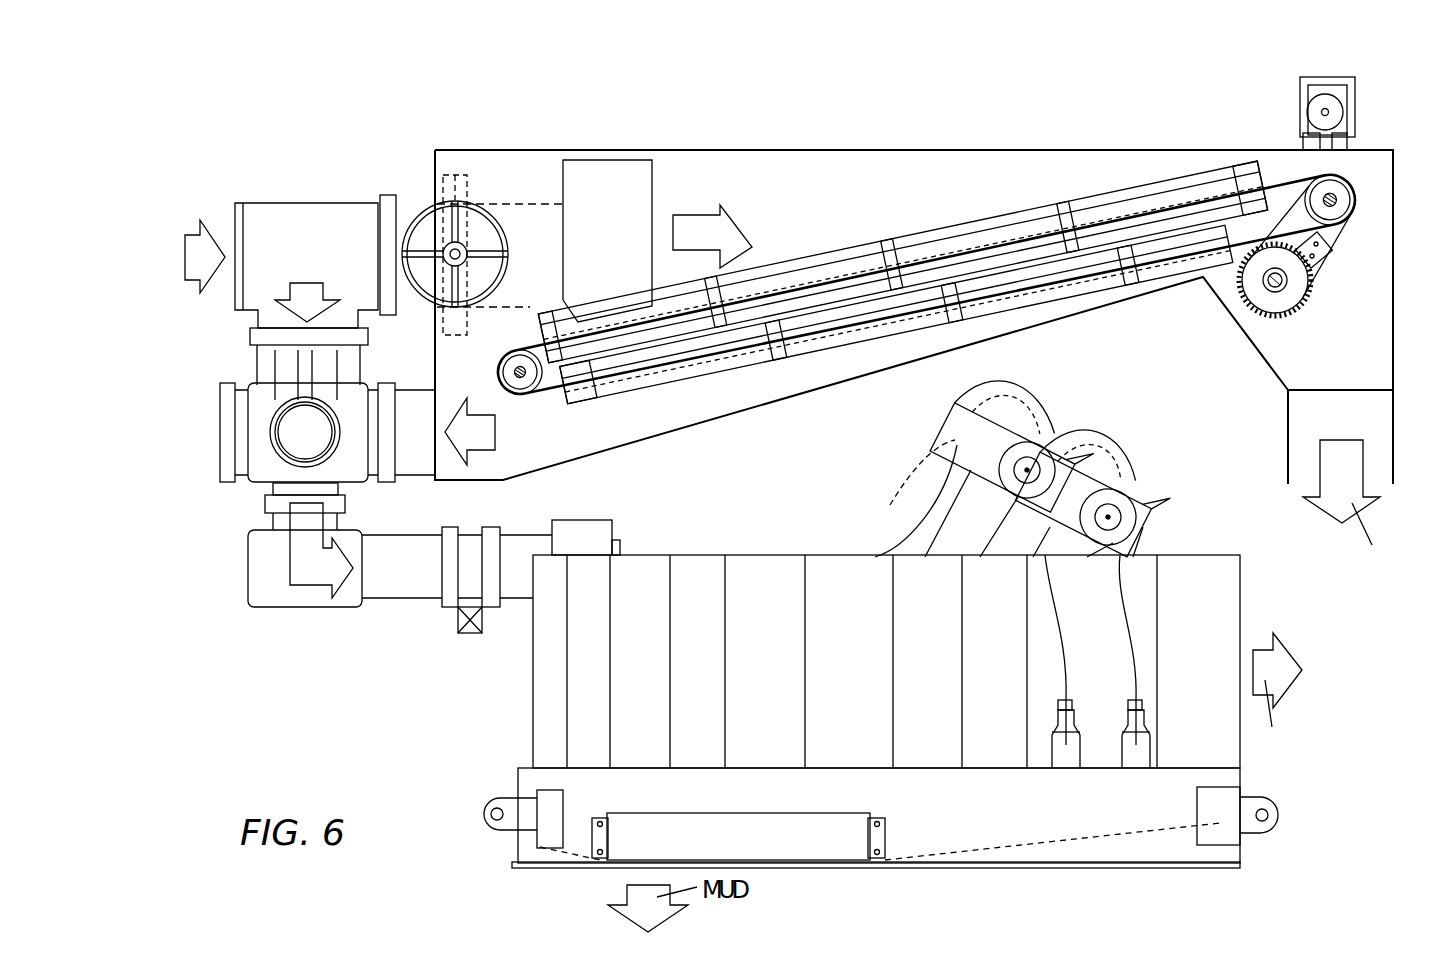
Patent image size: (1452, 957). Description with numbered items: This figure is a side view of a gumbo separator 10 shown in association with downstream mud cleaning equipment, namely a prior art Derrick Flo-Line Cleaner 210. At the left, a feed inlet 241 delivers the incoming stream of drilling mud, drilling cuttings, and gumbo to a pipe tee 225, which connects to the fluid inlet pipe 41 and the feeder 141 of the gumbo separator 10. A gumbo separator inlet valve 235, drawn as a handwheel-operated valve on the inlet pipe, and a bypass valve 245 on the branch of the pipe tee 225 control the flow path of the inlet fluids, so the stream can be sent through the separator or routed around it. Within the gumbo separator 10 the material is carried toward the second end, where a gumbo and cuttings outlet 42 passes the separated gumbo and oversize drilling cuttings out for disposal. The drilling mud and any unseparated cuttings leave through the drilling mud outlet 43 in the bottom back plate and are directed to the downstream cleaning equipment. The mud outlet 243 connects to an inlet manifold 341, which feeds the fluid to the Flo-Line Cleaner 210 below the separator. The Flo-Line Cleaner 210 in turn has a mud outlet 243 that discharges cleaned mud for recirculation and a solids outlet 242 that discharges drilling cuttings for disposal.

The gumbo separator 10 is at (998, 99).
The fluid inlet pipe 41 is at (537, 218).
The gumbo and cuttings outlet 42 is at (1315, 420).
The drilling mud outlet 43 is at (415, 407).
The feeder 141 is at (615, 178).
The Flo-Line Cleaner 210 is at (797, 514).
The pipe tee 225 is at (303, 218).
The gumbo separator inlet valve 235 is at (455, 180).
The feed inlet 241 is at (230, 218).
The solids outlet 242 is at (1242, 620).
The mud outlet 243 is at (650, 833).
The bypass valve 245 is at (258, 335).
The inlet manifold 341 is at (402, 583).